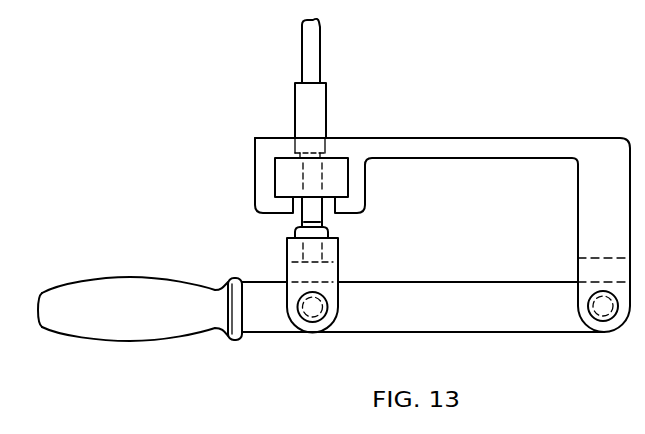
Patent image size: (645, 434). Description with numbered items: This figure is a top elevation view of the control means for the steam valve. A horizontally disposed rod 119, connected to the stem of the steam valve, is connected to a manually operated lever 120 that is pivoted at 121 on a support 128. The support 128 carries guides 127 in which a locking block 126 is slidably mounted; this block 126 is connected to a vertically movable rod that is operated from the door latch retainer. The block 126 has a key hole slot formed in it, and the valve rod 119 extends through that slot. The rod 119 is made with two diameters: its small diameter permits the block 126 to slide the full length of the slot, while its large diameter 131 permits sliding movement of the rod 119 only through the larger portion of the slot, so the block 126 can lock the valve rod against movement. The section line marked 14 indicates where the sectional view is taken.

The rod 119 is at (305, 63).
The large diameter 131 is at (300, 98).
The locking block 126 is at (338, 163).
The guides 127 is at (264, 167).
The support 128 is at (478, 145).
The manually operated lever 120 is at (517, 293).
The pivot 121 is at (602, 296).
The section line FIG. 14 is at (235, 223).